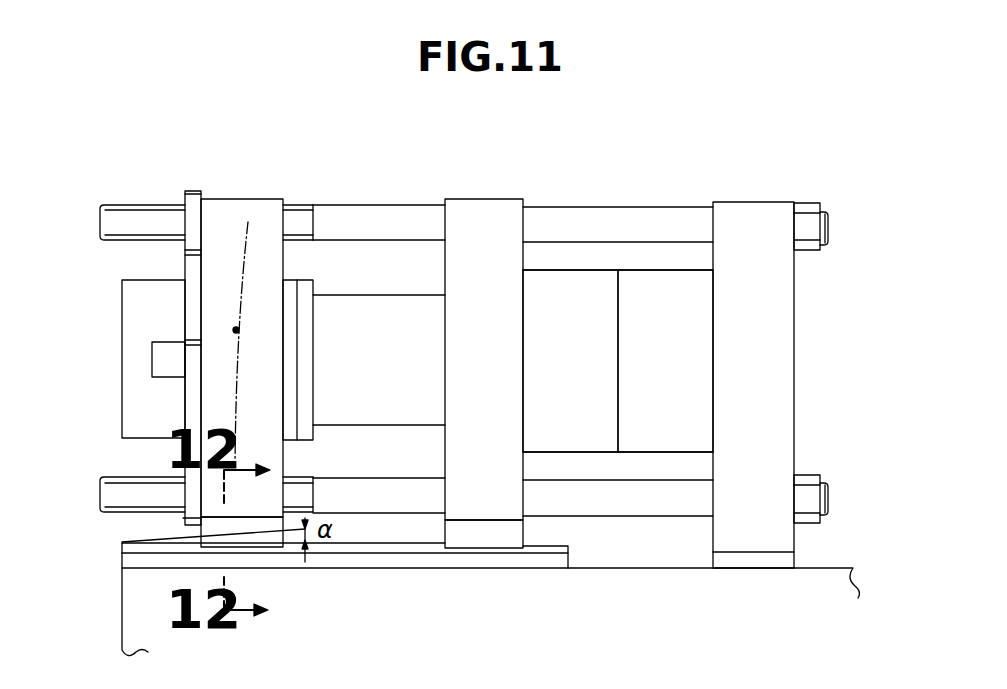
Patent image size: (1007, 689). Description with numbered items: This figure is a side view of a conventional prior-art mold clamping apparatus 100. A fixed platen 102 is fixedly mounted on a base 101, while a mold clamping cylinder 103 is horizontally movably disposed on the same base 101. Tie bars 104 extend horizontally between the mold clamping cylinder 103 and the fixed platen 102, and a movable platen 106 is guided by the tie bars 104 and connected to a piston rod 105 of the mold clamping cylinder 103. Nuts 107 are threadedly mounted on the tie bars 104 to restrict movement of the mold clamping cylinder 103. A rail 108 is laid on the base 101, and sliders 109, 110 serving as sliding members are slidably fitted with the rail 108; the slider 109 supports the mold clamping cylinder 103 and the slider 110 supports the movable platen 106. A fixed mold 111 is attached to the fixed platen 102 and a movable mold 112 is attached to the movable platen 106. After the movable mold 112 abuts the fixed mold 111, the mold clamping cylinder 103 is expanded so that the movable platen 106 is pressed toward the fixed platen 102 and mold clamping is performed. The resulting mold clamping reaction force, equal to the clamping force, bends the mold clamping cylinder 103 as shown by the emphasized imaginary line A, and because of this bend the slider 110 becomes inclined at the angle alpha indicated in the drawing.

The mold clamping apparatus 100 is at (851, 182).
The base 101 is at (828, 568).
The fixed platen 102 is at (753, 222).
The mold clamping cylinder 103 is at (227, 217).
The tie bars 104 is at (537, 220).
The piston rod 105 is at (357, 325).
The movable platen 106 is at (478, 218).
The nuts 107 is at (192, 200).
The rail 108 is at (358, 548).
The slider 109 is at (262, 538).
The slider 110 is at (478, 533).
The fixed mold 111 is at (655, 296).
The movable mold 112 is at (570, 296).
The imaginary line A is at (236, 330).